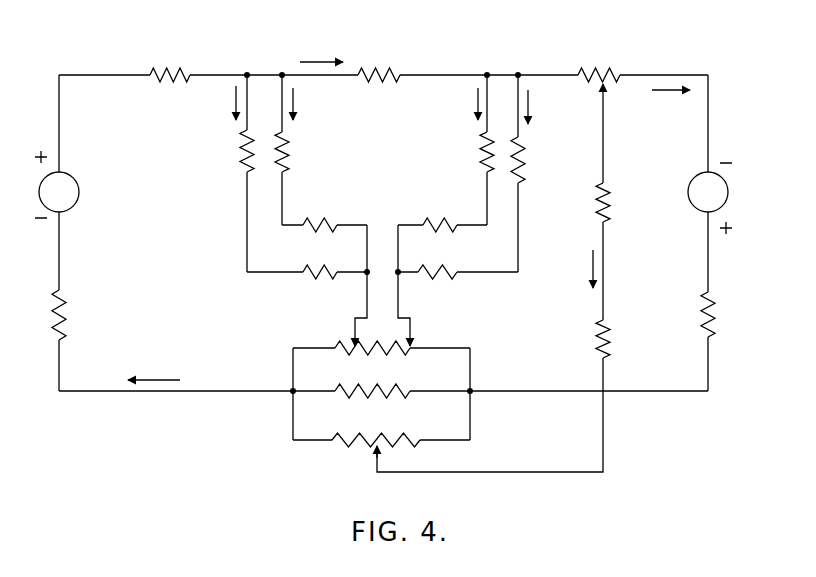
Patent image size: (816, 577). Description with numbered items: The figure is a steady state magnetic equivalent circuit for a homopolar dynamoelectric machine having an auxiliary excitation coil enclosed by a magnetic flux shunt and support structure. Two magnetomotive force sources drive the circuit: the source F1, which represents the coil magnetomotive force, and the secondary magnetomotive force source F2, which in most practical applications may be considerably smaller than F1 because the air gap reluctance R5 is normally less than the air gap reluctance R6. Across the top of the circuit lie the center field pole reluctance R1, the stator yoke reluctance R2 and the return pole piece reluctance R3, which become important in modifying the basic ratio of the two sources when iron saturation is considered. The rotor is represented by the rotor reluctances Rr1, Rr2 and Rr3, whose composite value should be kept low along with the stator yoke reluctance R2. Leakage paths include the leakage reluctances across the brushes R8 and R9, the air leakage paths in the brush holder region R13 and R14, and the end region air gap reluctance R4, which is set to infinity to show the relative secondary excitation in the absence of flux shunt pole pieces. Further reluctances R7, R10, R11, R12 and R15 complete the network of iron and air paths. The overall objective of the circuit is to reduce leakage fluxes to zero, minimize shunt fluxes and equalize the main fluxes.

The auxiliary coil magnetomotive force F1 is at (59, 192).
The secondary magnetomotive force source F2 is at (708, 192).
The center field pole reluctance R1 is at (172, 73).
The stator yoke reluctance R2 is at (384, 72).
The return pole piece reluctance R3 is at (600, 72).
The end region air gap reluctance R4 is at (590, 323).
The air gap reluctance R5 is at (712, 298).
The air gap reluctance R6 is at (66, 318).
The reluctance R7 is at (322, 274).
The leakage reluctance across the brushes R8 is at (322, 225).
The leakage reluctance across the brushes R9 is at (442, 225).
The reluctance R10 is at (436, 276).
The reluctance R11 is at (242, 148).
The reluctance R12 is at (525, 150).
The brush holder region air leakage path reluctance R13 is at (289, 152).
The brush holder region air leakage path reluctance R14 is at (482, 150).
The resistor R15 is at (612, 198).
The rotor reluctance Rr1 is at (406, 350).
The rotor reluctance Rr2 is at (396, 396).
The rotor reluctance Rr3 is at (334, 444).